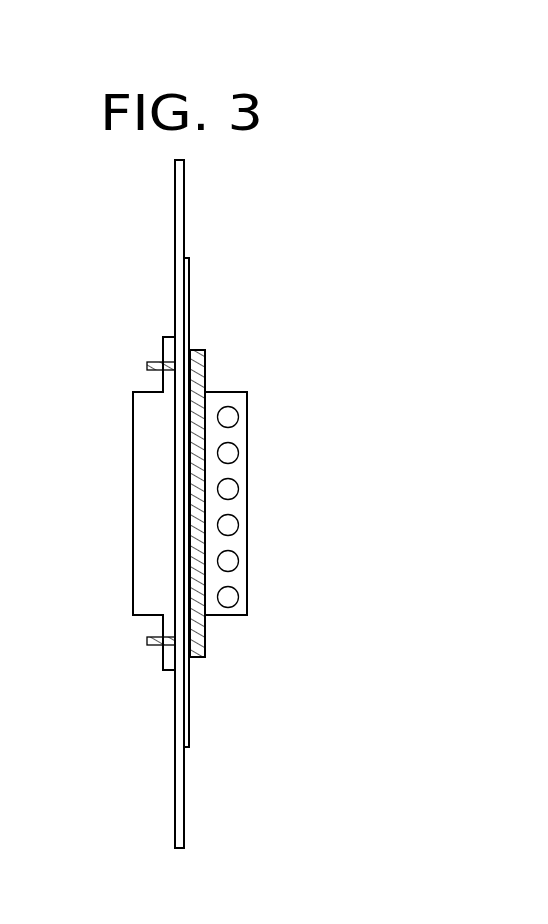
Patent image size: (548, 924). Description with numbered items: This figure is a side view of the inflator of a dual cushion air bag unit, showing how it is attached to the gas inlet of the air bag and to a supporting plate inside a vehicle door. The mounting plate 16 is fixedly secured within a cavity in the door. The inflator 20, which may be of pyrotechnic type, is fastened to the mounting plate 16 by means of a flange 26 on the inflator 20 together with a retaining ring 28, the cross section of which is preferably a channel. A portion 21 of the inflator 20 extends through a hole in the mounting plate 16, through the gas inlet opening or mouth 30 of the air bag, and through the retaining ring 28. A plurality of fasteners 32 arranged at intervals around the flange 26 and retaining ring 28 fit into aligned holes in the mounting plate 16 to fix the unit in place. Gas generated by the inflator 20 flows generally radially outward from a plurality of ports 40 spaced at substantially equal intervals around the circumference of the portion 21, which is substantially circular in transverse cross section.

The mounting plate 16 is at (184, 213).
The gas inlet opening or mouth 30 is at (189, 290).
The retaining ring 28 is at (205, 364).
The inflator 20 is at (248, 487).
The ports 40 is at (232, 527).
The portion of the inflator 21 is at (225, 615).
The fasteners 32 is at (147, 362).
The flange 26 is at (170, 663).